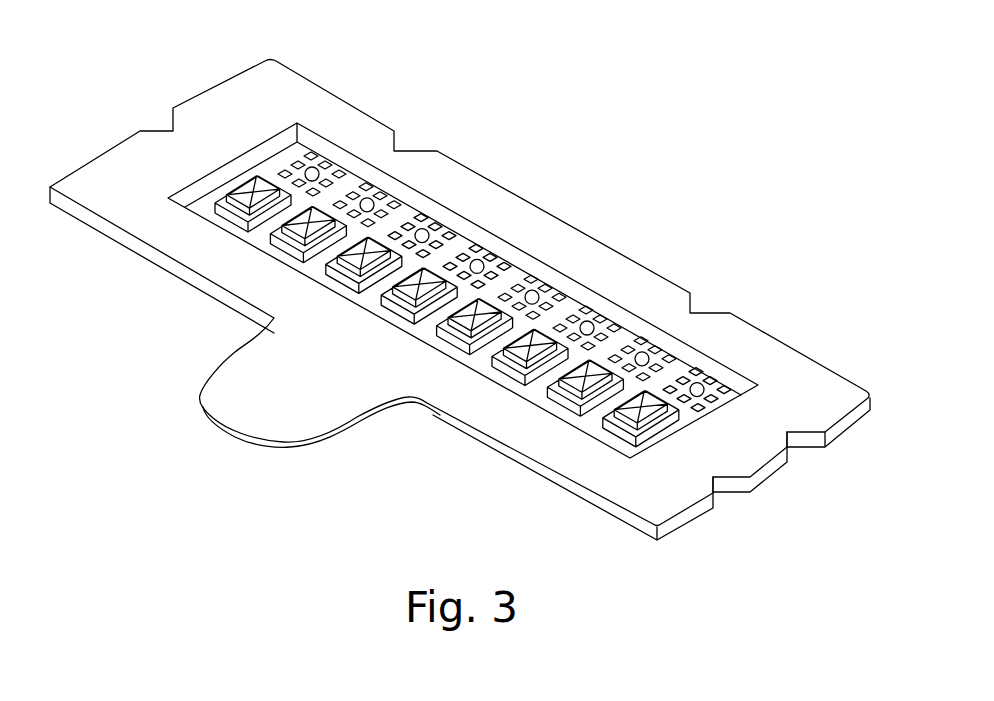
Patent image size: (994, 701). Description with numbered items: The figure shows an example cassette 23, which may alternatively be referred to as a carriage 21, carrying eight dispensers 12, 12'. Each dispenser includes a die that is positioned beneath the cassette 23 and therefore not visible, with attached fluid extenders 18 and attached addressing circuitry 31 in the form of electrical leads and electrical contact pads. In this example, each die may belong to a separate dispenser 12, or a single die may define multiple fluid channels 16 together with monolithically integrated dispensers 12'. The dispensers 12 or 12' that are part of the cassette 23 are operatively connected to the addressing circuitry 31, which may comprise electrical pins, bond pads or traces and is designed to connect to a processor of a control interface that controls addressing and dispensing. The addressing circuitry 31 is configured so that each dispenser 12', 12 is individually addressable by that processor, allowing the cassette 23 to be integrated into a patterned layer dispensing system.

The dispenser 12 is at (373, 338).
The monolithically integrated dispenser 12' is at (234, 262).
The fluid channel 16 is at (568, 355).
The fluid extender 18 is at (525, 373).
The carriage 21 is at (463, 290).
The cassette 23 is at (760, 358).
The addressing circuitry 31 is at (362, 73).